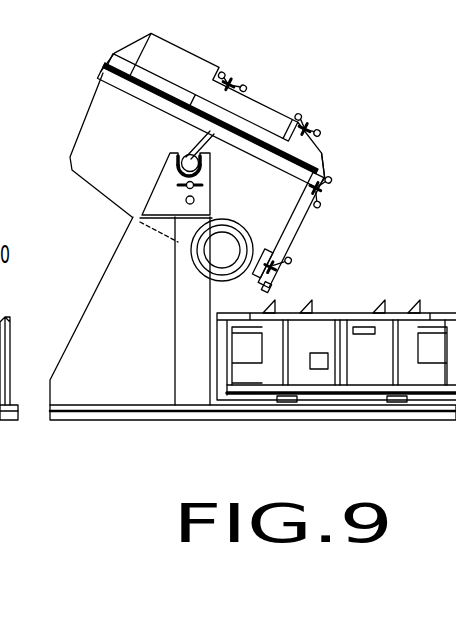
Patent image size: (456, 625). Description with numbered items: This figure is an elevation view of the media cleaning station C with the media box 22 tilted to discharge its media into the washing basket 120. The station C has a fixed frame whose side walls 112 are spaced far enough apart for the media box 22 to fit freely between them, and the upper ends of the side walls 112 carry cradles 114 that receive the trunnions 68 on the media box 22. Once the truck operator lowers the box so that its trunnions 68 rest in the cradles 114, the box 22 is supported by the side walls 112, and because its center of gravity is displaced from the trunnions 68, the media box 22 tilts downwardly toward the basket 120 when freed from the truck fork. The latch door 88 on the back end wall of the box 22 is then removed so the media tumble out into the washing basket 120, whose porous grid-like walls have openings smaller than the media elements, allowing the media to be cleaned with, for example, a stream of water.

The media box 22 is at (333, 148).
The media cleaning station C is at (357, 167).
The trunnions 68 is at (186, 158).
The latch door 88 is at (306, 223).
The side walls 112 is at (120, 297).
The cradles 114 is at (181, 172).
The washing basket 120 is at (347, 343).